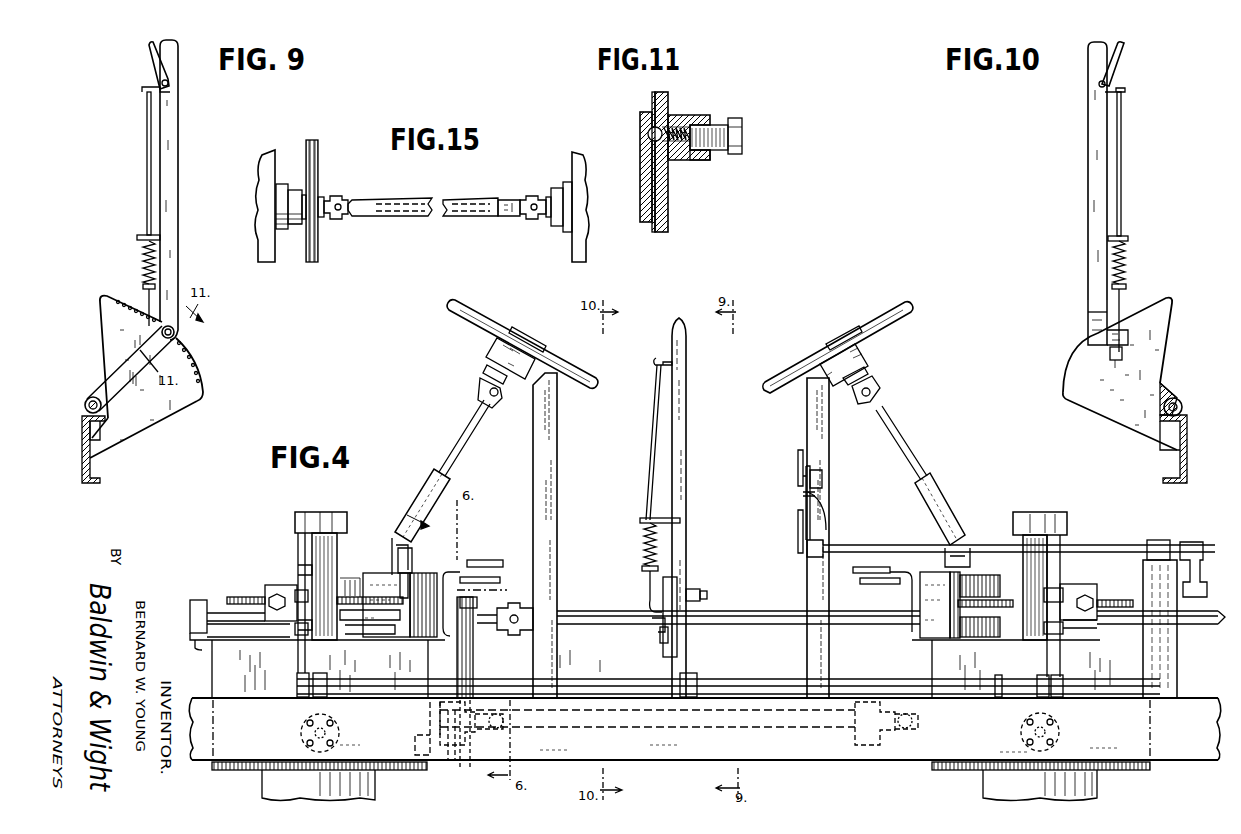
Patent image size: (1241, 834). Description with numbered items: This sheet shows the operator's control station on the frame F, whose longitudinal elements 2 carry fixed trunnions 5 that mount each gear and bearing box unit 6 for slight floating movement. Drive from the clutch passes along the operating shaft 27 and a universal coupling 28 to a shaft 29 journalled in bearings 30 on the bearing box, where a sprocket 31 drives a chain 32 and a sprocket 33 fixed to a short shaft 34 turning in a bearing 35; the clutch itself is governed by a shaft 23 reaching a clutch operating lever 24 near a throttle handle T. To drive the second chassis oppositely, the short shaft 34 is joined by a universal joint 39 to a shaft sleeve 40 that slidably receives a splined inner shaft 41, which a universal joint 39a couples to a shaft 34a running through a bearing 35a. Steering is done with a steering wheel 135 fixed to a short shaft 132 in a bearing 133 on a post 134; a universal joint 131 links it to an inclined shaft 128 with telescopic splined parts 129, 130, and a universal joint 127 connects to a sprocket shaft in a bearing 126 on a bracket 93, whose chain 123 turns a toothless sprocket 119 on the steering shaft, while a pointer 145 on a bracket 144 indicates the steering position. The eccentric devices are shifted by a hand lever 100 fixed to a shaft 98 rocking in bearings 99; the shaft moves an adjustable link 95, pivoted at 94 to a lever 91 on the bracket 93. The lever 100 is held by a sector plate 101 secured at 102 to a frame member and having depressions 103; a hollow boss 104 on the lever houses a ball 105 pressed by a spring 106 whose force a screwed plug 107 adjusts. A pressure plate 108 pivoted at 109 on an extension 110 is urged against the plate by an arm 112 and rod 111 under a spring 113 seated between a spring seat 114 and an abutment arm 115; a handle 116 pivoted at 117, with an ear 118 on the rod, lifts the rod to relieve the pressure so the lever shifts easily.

In FIG. 9, the longitudinal element 2 is at (80, 448).
In FIG. 10, the longitudinal element 2 is at (1186, 430).
In FIG. 4, the longitudinal element 2 is at (892, 762).
In FIG. 4, the trunnion 5 is at (296, 728).
In FIG. 15, the gear and bearing box unit 6 is at (278, 152).
In FIG. 4, the gear and bearing box unit 6 is at (407, 778).
In FIG. 4, the throttle handle T is at (796, 454).
In FIG. 4, the frame F is at (1195, 715).
In FIG. 4, the shaft 23 is at (1100, 545).
In FIG. 4, the clutch operating lever 24 is at (798, 528).
In FIG. 4, the operating shaft 27 is at (590, 618).
In FIG. 4, the universal coupling 28 is at (512, 606).
In FIG. 4, the shaft 29 is at (222, 612).
In FIG. 4, the bearing 30 is at (198, 600).
In FIG. 4, the sprocket 31 is at (478, 612).
In FIG. 15, the chain 32 is at (316, 140).
In FIG. 4, the chain 32 is at (460, 662).
In FIG. 15, the sprocket 33 is at (320, 178).
In FIG. 15, the short shaft 34 is at (304, 195).
In FIG. 15, the shaft 34a is at (548, 220).
In FIG. 15, the bearing 35 is at (292, 230).
In FIG. 15, the bearing 35a is at (556, 188).
In FIG. 15, the universal joint 39 is at (343, 220).
In FIG. 4, the universal joint 39 is at (505, 730).
In FIG. 15, the universal joint 39a is at (534, 232).
In FIG. 15, the shaft sleeve 40 is at (424, 194).
In FIG. 4, the shaft sleeve 40 is at (650, 730).
In FIG. 15, the inner shaft 41 is at (414, 212).
In FIG. 4, the inner shaft 41 is at (868, 732).
In FIG. 4, the lever 91 is at (1054, 512).
In FIG. 4, the bracket 93 is at (338, 548).
In FIG. 4, the pivot 94 is at (294, 512).
In FIG. 4, the adjustable link 95 is at (298, 536).
In FIG. 9, the shaft 98 is at (90, 398).
In FIG. 4, the shaft 98 is at (596, 684).
In FIG. 4, the bearing 99 is at (364, 676).
In FIG. 9, the lever 100 is at (176, 172).
In FIG. 11, the lever 100 is at (668, 212).
In FIG. 10, the lever 100 is at (1088, 190).
In FIG. 4, the lever 100 is at (686, 410).
In FIG. 9, the sector plate 101 is at (167, 407).
In FIG. 11, the sector plate 101 is at (640, 198).
In FIG. 10, the sector plate 101 is at (1088, 404).
In FIG. 9, the securing point 102 is at (103, 444).
In FIG. 10, the securing point 102 is at (1172, 447).
In FIG. 9, the holes or depressions 103 is at (122, 296).
In FIG. 11, the holes or depressions 103 is at (641, 122).
In FIG. 11, the hollow boss 104 is at (686, 112).
In FIG. 11, the ball 105 is at (655, 140).
In FIG. 11, the spring 106 is at (695, 160).
In FIG. 9, the screwed plug 107 is at (176, 332).
In FIG. 11, the screwed plug 107 is at (738, 118).
In FIG. 10, the pressure plate 108 is at (1118, 362).
In FIG. 4, the pressure plate 108 is at (662, 645).
In FIG. 4, the pivot 109 is at (656, 624).
In FIG. 10, the bracket or extension 110 is at (1094, 332).
In FIG. 4, the bracket or extension 110 is at (672, 580).
In FIG. 9, the rod 111 is at (147, 166).
In FIG. 10, the rod 111 is at (1122, 210).
In FIG. 4, the rod 111 is at (654, 422).
In FIG. 4, the arm 112 is at (648, 602).
In FIG. 9, the spring 113 is at (143, 259).
In FIG. 10, the spring 113 is at (1127, 270).
In FIG. 4, the spring 113 is at (644, 536).
In FIG. 10, the spring seat 114 is at (1128, 288).
In FIG. 4, the spring seat 114 is at (644, 568).
In FIG. 10, the abutment arm 115 is at (1128, 238).
In FIG. 4, the abutment arm 115 is at (645, 518).
In FIG. 9, the handle 116 is at (150, 60).
In FIG. 10, the handle 116 is at (1122, 62).
In FIG. 9, the pivot 117 is at (169, 84).
In FIG. 10, the pivot 117 is at (1098, 86).
In FIG. 9, the ear 118 is at (143, 91).
In FIG. 10, the ear 118 is at (1125, 90).
In FIG. 4, the ear 118 is at (656, 363).
In FIG. 4, the toothless sprocket 119 is at (247, 596).
In FIG. 4, the chain 123 is at (356, 596).
In FIG. 4, the bearing 126 is at (407, 586).
In FIG. 4, the universal joint 127 is at (392, 540).
In FIG. 4, the inclined shaft 128 is at (458, 438).
In FIG. 4, the inner splined part 129 is at (416, 514).
In FIG. 4, the outer splined part 130 is at (470, 420).
In FIG. 4, the universal joint 131 is at (480, 394).
In FIG. 4, the short shaft 132 is at (486, 370).
In FIG. 4, the bearing 133 is at (498, 353).
In FIG. 4, the post 134 is at (556, 428).
In FIG. 4, the steering wheel 135 is at (576, 366).
In FIG. 4, the bracket 144 is at (912, 632).
In FIG. 4, the pointer 145 is at (490, 562).